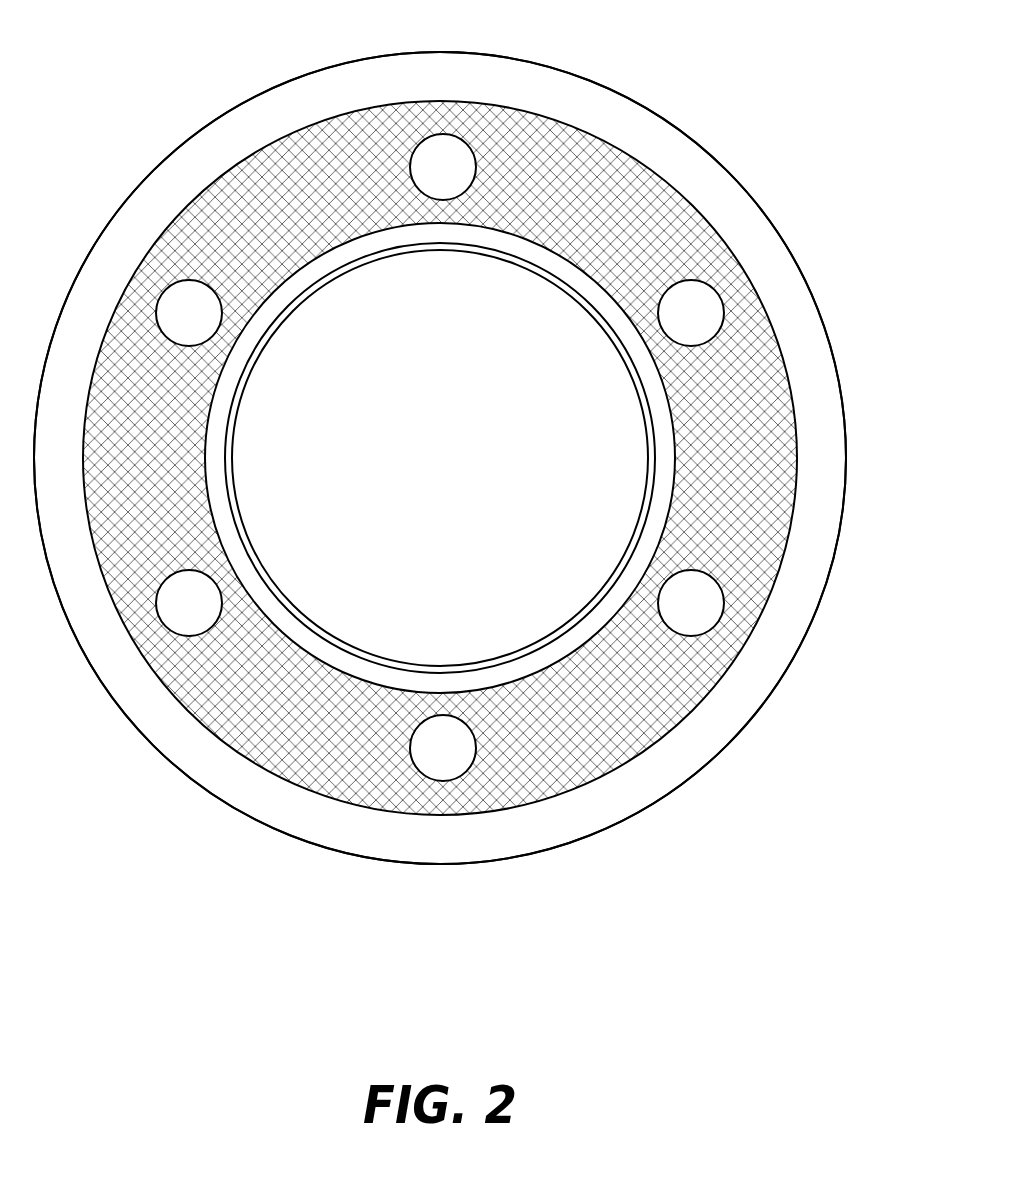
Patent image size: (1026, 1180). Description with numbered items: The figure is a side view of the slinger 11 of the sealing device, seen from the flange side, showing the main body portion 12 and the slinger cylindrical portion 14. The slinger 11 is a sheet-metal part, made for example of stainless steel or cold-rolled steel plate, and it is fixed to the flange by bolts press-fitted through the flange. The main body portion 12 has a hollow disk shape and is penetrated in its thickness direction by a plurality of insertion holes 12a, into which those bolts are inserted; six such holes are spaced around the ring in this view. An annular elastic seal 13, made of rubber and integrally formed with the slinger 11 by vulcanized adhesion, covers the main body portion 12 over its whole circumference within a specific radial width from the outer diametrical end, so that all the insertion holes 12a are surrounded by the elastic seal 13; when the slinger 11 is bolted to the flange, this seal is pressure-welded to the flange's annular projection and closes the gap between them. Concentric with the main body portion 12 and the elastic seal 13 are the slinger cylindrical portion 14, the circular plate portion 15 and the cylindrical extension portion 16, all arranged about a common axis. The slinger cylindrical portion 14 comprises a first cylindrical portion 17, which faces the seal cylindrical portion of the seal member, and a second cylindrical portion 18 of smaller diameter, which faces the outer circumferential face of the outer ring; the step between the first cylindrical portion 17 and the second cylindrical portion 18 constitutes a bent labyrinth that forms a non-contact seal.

The slinger 11 is at (472, 432).
The main body portion 12 is at (440, 458).
The insertion holes 12a is at (716, 331).
The elastic seal 13 is at (305, 127).
The slinger cylindrical portion 14 is at (440, 458).
The circular plate portion 15 is at (765, 258).
The extension portion 16 is at (720, 160).
The first cylindrical portion 17 is at (427, 672).
The second cylindrical portion 18 is at (478, 583).